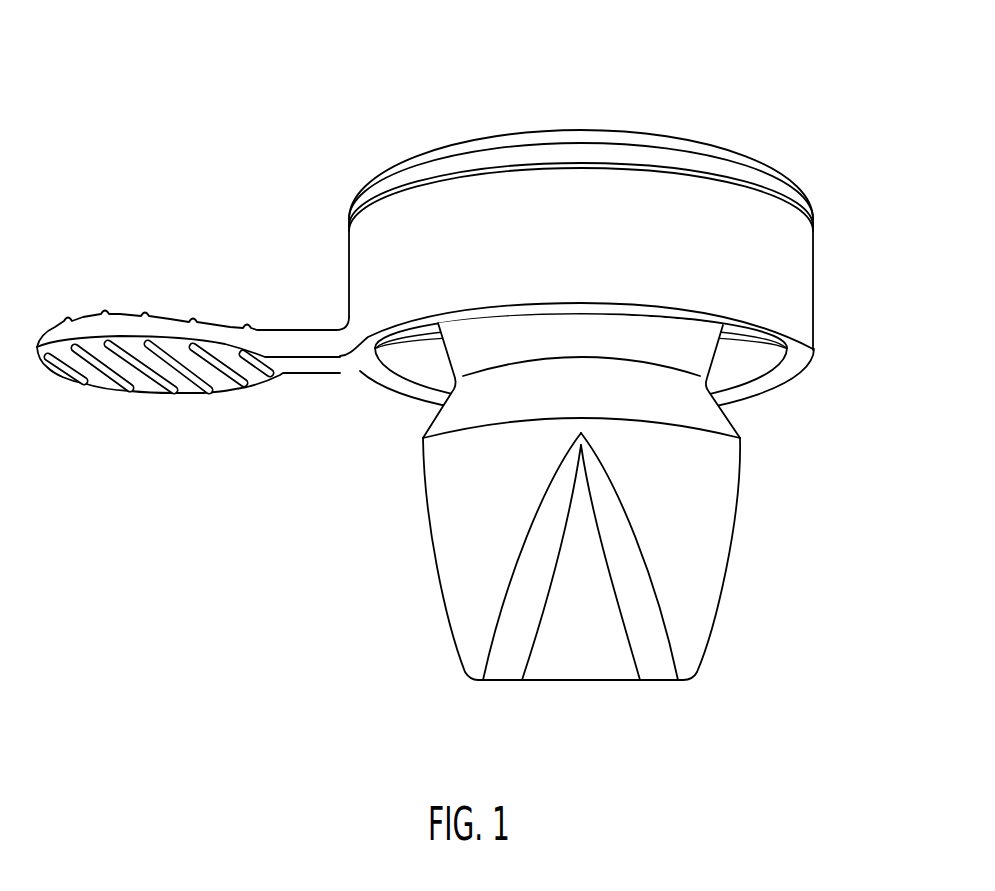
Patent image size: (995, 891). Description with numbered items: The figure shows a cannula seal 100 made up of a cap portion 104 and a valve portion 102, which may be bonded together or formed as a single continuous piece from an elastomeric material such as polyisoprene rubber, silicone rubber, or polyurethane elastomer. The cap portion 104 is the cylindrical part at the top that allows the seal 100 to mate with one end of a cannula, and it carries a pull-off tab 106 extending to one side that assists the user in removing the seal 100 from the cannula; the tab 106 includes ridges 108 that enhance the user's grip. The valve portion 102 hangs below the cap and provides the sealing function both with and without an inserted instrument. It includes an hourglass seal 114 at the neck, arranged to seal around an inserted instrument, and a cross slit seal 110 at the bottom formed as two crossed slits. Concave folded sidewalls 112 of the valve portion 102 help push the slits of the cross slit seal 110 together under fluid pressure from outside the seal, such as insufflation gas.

The cannula seal 100 is at (233, 102).
The valve portion 102 is at (723, 523).
The cap portion 104 is at (793, 270).
The pull-off tab 106 is at (124, 318).
The ridges 108 is at (173, 393).
The cross slit seal 110 is at (473, 681).
The folded sidewalls 112 is at (637, 603).
The hourglass seal 114 is at (446, 368).